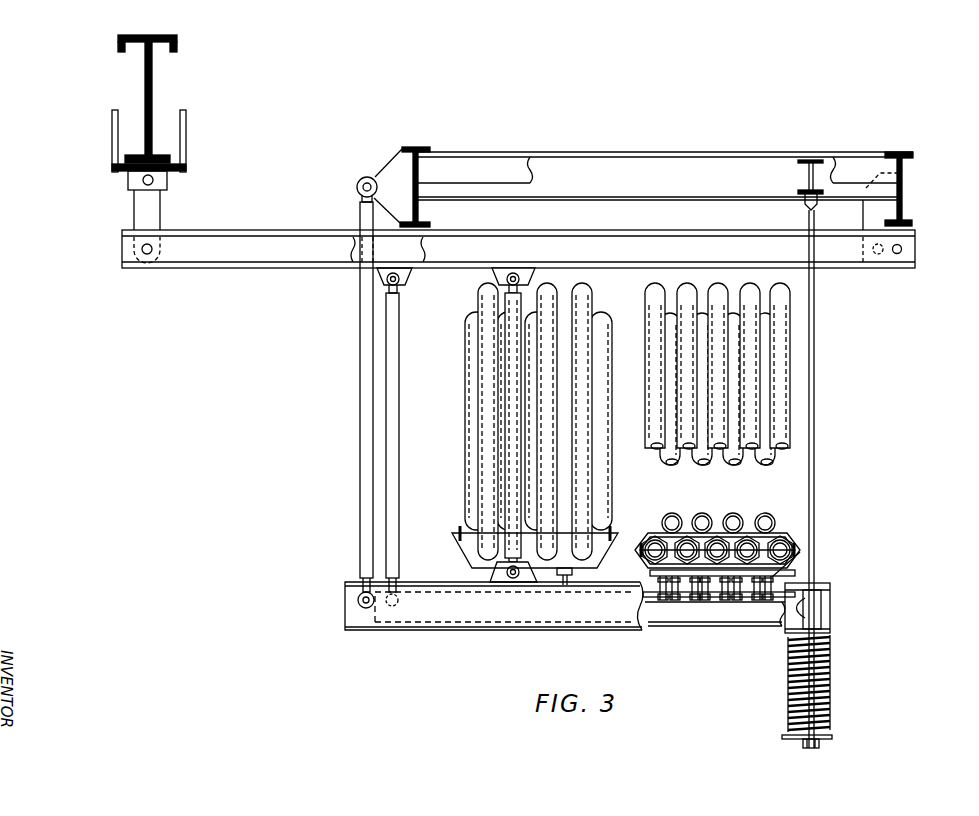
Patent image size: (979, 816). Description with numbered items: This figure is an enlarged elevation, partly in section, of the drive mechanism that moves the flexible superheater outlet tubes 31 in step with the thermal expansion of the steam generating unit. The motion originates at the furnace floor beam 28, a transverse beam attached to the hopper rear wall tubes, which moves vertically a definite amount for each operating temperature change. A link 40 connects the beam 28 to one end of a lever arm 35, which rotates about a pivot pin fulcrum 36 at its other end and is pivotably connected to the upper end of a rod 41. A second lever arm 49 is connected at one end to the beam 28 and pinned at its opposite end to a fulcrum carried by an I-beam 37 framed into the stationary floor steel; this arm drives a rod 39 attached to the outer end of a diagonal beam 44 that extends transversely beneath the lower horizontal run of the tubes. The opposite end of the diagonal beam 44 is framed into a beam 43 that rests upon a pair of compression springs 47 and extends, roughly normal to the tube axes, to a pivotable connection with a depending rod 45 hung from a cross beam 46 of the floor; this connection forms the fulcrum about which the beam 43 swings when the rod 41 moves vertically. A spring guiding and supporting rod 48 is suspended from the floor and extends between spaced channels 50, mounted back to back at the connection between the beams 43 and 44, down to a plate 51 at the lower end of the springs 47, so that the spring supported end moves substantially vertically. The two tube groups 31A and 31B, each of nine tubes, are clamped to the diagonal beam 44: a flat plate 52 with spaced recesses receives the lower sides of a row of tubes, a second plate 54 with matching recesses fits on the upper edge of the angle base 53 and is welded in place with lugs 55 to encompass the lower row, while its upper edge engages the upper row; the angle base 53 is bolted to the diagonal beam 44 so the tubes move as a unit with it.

The transverse beam 28 is at (152, 87).
The link 40 is at (150, 208).
The lever arm 35 is at (267, 247).
The pivot pin fulcrum 36 is at (903, 249).
The cross beam 46 is at (422, 168).
The I-beam 37 is at (900, 200).
The lever arm 49 is at (383, 242).
The depending rod 45 is at (362, 378).
The rod 39 is at (397, 470).
The rod 41 is at (510, 302).
The tubes 31 is at (485, 552).
The tube group 31A is at (462, 400).
The tube group 31B is at (796, 375).
The spring guiding and supporting rod 48 is at (815, 437).
The beam 43 is at (473, 613).
The diagonal beam 44 is at (402, 622).
The flat plate 52 is at (646, 548).
The angle base 53 is at (654, 583).
The second plate 54 is at (648, 540).
The lugs 55 is at (795, 548).
The channels 50 is at (813, 613).
The compression springs 47 is at (826, 667).
The plate 51 is at (830, 734).